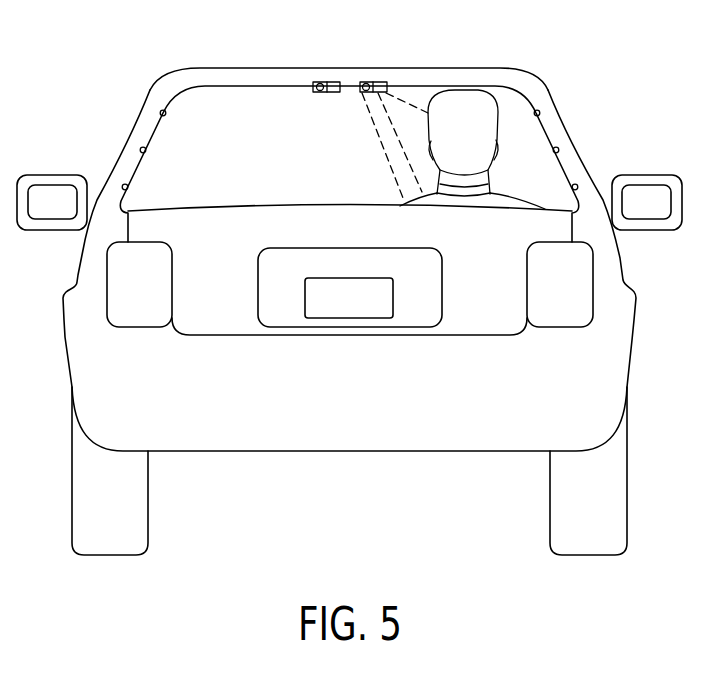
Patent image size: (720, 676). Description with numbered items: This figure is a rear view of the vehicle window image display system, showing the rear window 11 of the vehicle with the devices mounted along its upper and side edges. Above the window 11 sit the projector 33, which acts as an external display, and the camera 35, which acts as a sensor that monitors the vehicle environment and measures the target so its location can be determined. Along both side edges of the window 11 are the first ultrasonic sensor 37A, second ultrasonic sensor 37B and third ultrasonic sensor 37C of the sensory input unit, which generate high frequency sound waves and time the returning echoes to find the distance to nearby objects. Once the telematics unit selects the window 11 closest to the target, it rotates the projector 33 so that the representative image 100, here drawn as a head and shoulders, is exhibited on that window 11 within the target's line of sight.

The window 11 is at (412, 95).
The projector 33 is at (332, 84).
The camera 35 is at (378, 84).
The first ultrasonic sensor 37A is at (160, 111).
The second ultrasonic sensor 37B is at (141, 149).
The third ultrasonic sensor 37C is at (123, 186).
The representative image 100 is at (467, 103).